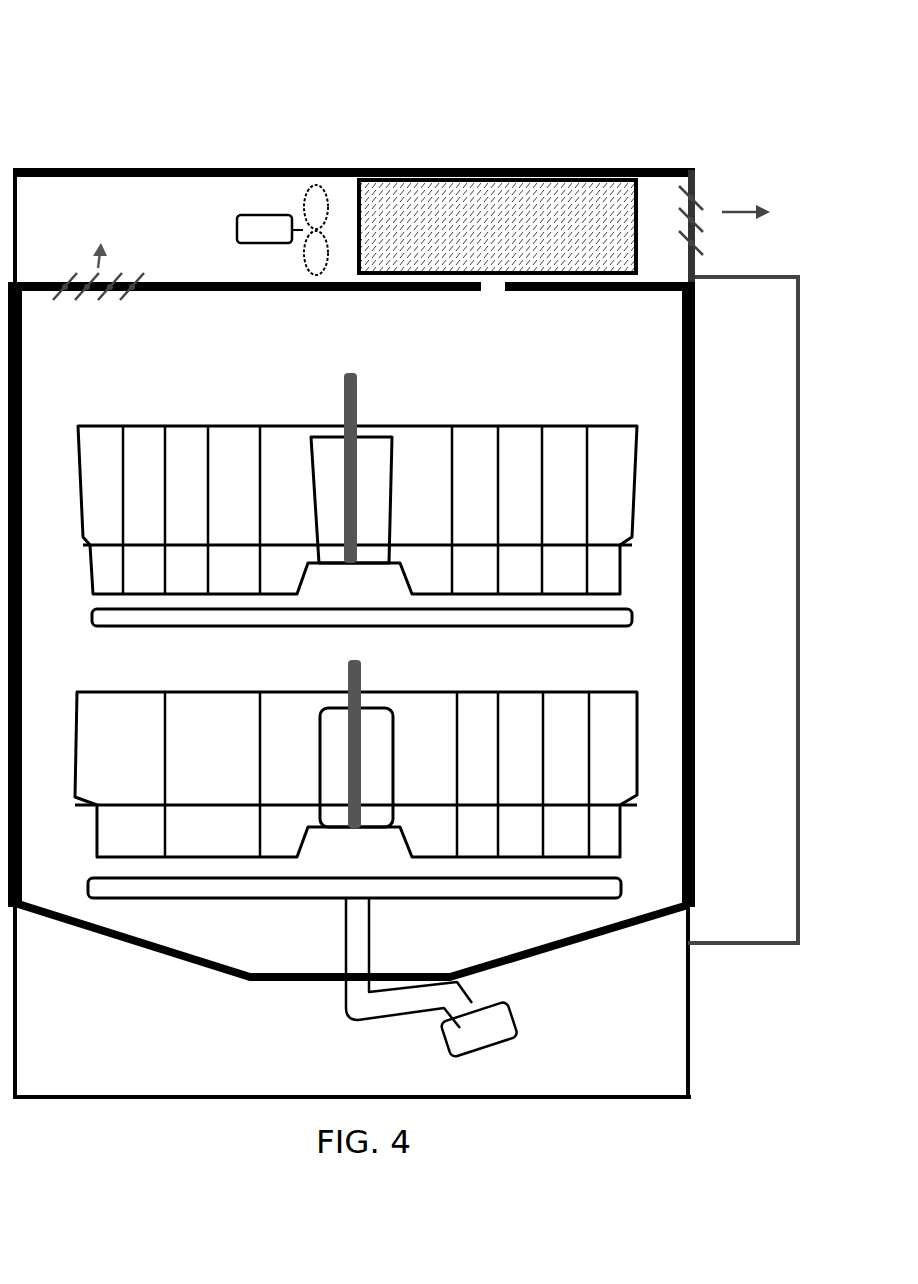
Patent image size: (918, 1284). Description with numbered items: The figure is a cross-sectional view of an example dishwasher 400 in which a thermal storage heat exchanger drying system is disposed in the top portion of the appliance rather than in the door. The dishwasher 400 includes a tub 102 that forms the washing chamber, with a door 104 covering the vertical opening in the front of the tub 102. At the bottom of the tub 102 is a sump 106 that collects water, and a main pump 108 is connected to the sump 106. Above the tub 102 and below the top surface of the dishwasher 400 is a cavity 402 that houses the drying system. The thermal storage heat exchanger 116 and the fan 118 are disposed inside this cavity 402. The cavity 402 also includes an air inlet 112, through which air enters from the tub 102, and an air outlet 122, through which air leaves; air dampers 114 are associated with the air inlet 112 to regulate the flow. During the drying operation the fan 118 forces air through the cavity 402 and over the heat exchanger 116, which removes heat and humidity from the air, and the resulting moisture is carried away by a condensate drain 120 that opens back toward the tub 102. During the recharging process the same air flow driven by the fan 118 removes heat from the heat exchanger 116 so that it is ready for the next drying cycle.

The dishwasher 400 is at (132, 66).
The cavity 402 is at (153, 221).
The tub 102 is at (650, 333).
The door 104 is at (792, 383).
The sump 106 is at (312, 950).
The main pump 108 is at (507, 1016).
The air inlet 112 is at (74, 338).
The air dampers 114 is at (92, 266).
The thermal storage heat exchanger 116 is at (505, 212).
The fan 118 is at (263, 212).
The condensate drain 120 is at (487, 302).
The air outlet 122 is at (703, 191).